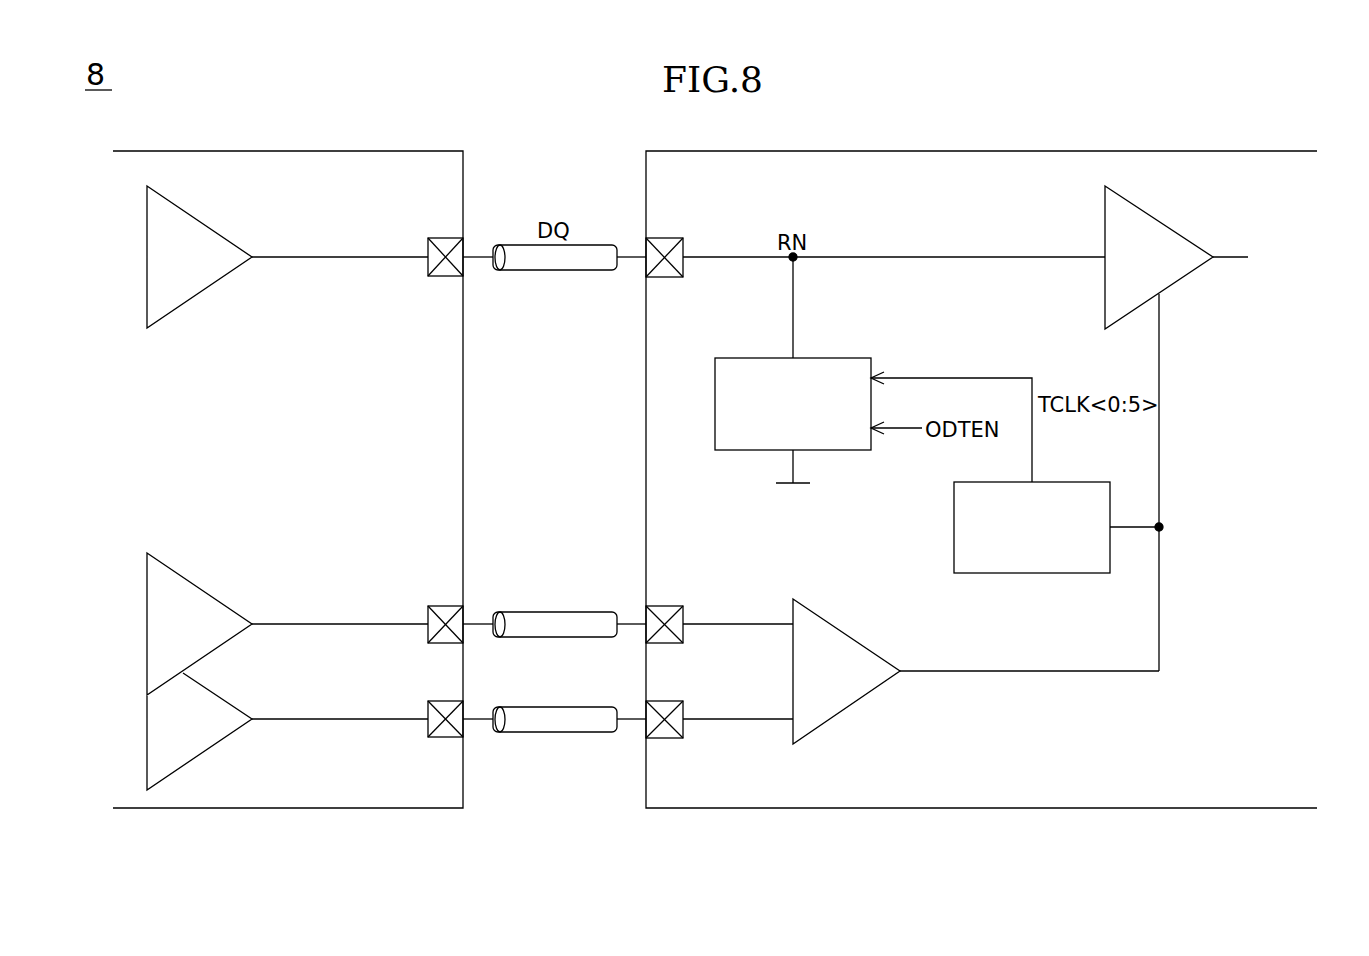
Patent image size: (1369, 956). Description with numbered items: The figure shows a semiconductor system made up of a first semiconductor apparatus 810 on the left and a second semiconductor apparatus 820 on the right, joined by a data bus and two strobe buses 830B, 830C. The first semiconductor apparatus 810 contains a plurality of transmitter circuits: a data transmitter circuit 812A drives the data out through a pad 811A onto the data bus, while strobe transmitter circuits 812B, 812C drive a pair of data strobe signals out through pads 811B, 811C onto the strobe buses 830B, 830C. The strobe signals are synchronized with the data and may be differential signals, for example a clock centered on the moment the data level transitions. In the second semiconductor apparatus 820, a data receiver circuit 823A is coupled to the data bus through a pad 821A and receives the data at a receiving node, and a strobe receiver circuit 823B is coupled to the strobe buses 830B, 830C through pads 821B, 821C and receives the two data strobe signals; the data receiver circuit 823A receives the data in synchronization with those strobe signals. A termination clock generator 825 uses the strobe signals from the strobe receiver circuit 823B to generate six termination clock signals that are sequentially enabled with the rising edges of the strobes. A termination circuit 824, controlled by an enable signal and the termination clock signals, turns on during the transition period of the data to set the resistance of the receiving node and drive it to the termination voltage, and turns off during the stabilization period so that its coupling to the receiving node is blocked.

The first semiconductor apparatus 810 is at (410, 151).
The second semiconductor apparatus 820 is at (1255, 151).
The pad 811A is at (437, 238).
The pad 811B is at (437, 606).
The pad 811C is at (437, 701).
The data transmitter circuit 812A is at (262, 234).
The strobe transmitter circuit 812B is at (262, 600).
The strobe transmitter circuit 812C is at (262, 694).
The pad 821A is at (673, 238).
The pad 821B is at (673, 606).
The pad 821C is at (688, 679).
The data receiver circuit 823A is at (1188, 215).
The strobe receiver circuit 823B is at (851, 633).
The termination circuit 824 is at (852, 347).
The termination clock generator 825 is at (1077, 482).
The strobe bus 830B is at (585, 637).
The strobe bus 830C is at (585, 732).